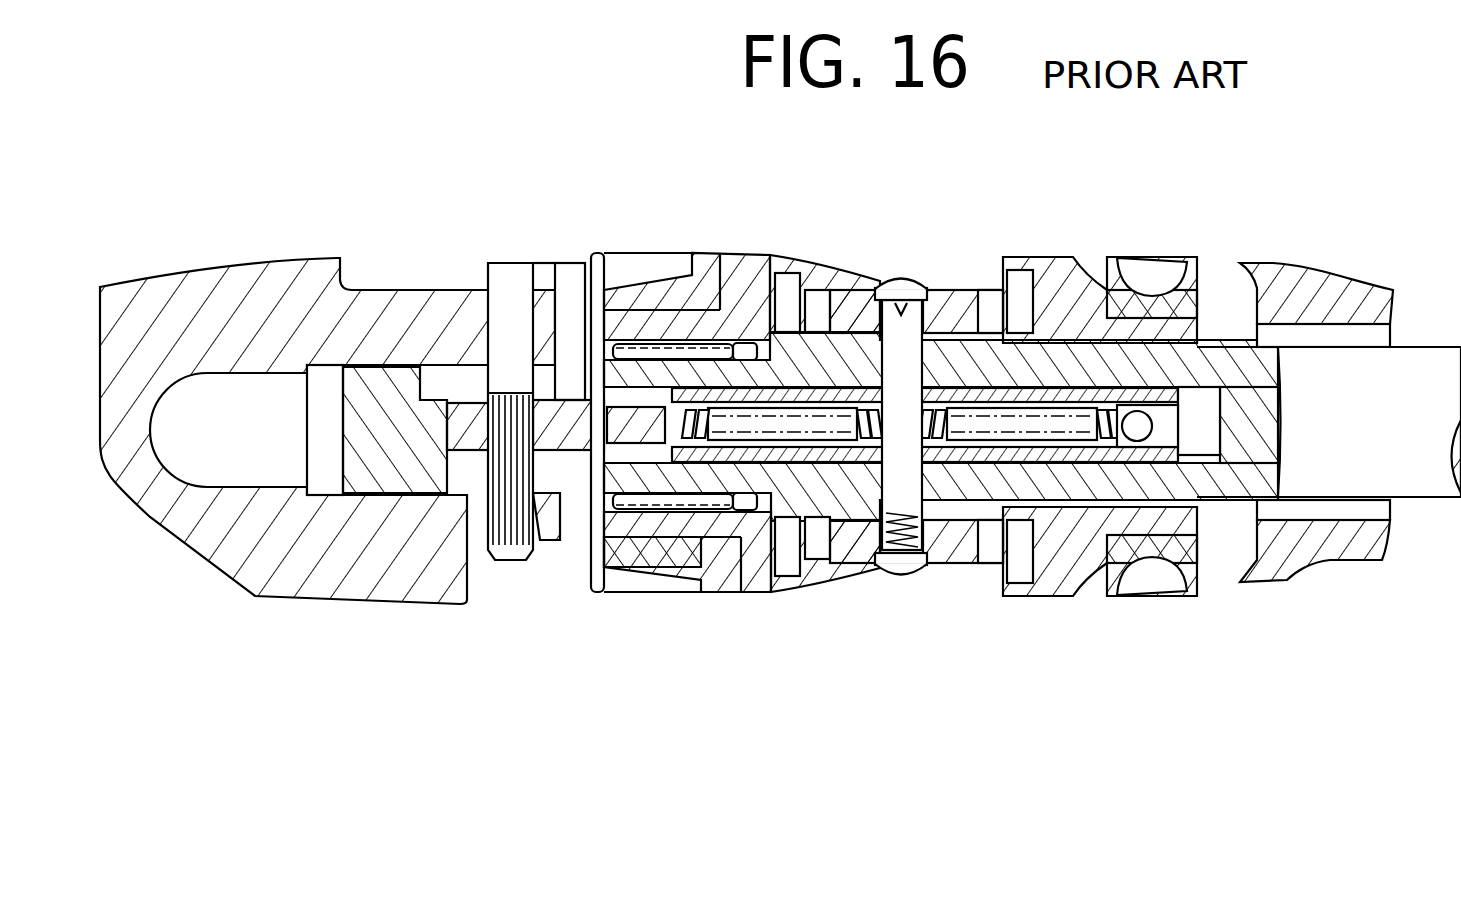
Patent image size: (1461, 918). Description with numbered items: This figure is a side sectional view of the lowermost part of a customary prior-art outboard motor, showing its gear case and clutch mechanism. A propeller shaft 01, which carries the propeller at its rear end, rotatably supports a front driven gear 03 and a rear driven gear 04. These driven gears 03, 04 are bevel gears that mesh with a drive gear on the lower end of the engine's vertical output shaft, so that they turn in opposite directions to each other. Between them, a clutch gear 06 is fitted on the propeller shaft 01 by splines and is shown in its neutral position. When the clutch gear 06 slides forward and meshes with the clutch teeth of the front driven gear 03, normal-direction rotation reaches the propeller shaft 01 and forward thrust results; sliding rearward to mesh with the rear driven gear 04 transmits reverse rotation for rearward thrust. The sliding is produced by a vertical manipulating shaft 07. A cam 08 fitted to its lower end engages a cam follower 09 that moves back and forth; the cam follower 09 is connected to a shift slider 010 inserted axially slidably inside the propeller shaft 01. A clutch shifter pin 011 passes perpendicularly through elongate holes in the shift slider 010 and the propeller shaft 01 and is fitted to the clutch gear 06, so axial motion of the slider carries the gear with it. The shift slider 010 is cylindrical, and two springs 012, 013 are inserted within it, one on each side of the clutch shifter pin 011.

The propeller shaft 01 is at (1372, 443).
The front driven gear 03 is at (757, 255).
The rear driven gear 04 is at (1040, 255).
The clutch gear 06 is at (945, 300).
The manipulating shaft 07 is at (513, 278).
The cam 08 is at (470, 437).
The cam follower 09 is at (592, 447).
The shift slider 010 is at (878, 567).
The clutch shifter pin 011 is at (910, 552).
The spring 012 is at (717, 430).
The spring 013 is at (1073, 427).